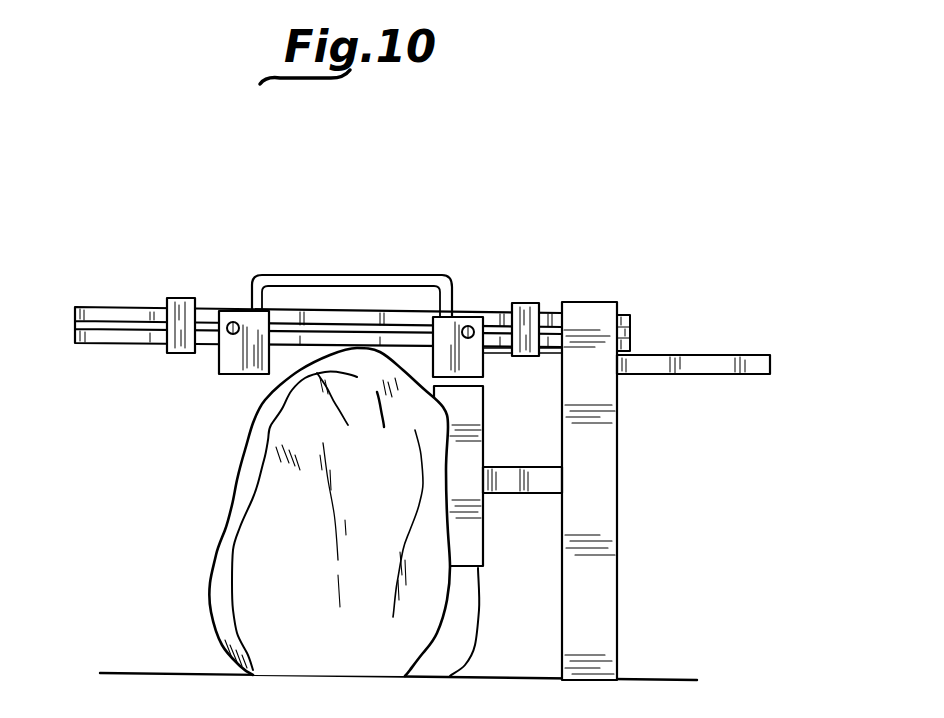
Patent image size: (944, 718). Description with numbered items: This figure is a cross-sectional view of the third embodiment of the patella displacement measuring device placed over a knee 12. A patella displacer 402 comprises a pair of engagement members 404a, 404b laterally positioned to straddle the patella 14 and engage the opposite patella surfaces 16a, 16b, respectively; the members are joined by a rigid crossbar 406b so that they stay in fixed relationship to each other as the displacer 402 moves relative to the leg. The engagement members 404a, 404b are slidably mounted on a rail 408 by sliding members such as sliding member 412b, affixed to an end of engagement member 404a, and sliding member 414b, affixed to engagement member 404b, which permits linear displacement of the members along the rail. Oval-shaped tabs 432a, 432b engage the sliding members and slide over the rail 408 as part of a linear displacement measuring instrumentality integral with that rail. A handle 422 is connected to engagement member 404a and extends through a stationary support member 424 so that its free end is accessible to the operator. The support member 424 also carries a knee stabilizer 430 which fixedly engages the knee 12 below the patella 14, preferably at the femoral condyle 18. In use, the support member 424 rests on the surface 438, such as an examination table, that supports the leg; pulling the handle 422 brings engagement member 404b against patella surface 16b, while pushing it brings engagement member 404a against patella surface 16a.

The knee 12 is at (303, 457).
The patella 14 is at (268, 392).
The patella surface 16a is at (391, 393).
The patella surface 16b is at (262, 428).
The femoral condyle 18 is at (483, 393).
The patella displacer 402 is at (245, 310).
The engagement member 404a is at (452, 323).
The engagement member 404b is at (220, 360).
The rigid crossbar 406b is at (312, 273).
The rail 408 is at (630, 317).
The sliding member 412b is at (470, 327).
The sliding member 414b is at (226, 308).
The handle 422 is at (760, 355).
The support member 424 is at (618, 533).
The knee stabilizer 430 is at (470, 523).
The oval-shaped tab 432a is at (523, 303).
The oval-shaped tab 432b is at (168, 297).
The surface 438 is at (130, 672).